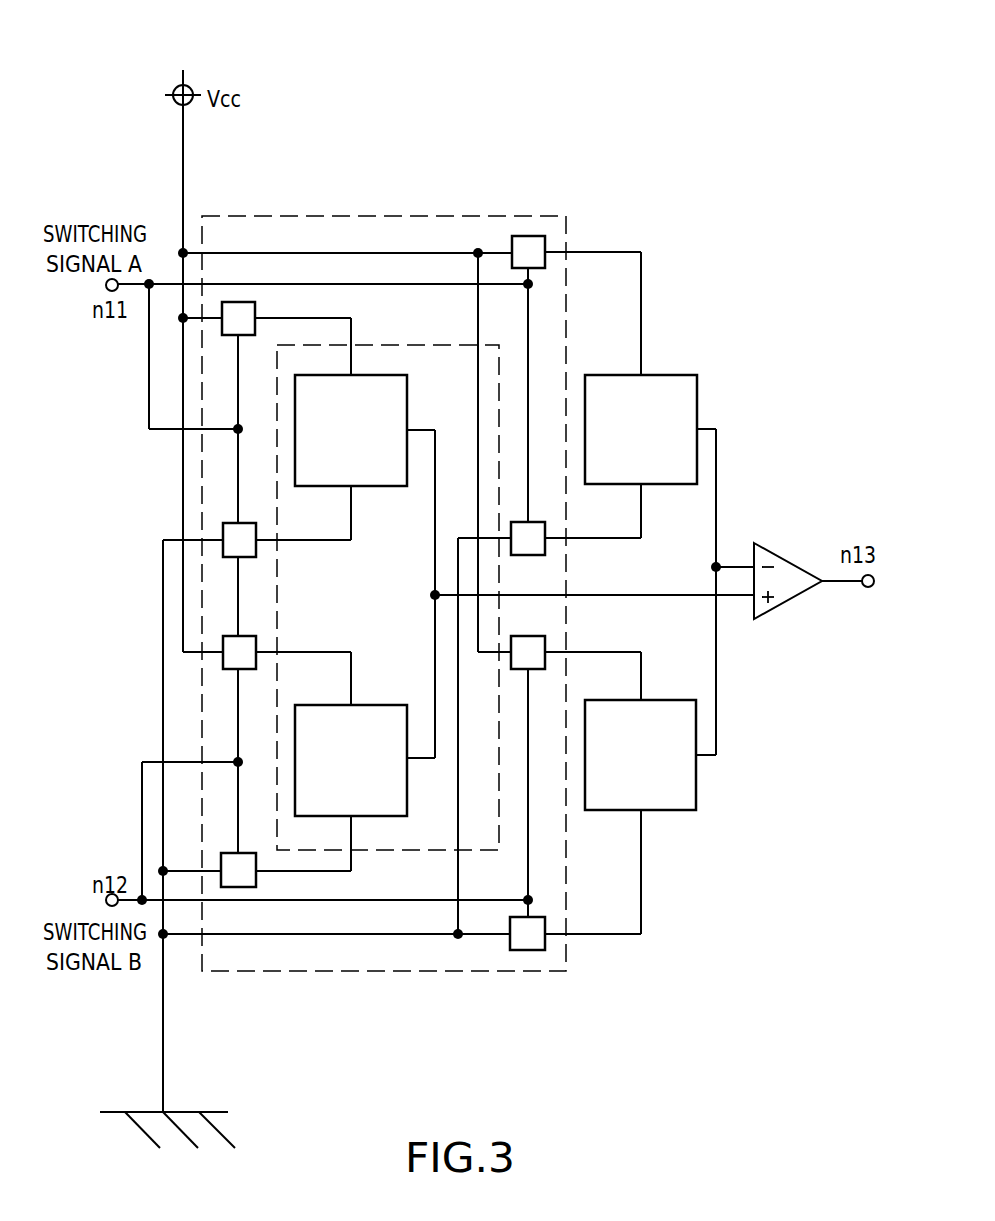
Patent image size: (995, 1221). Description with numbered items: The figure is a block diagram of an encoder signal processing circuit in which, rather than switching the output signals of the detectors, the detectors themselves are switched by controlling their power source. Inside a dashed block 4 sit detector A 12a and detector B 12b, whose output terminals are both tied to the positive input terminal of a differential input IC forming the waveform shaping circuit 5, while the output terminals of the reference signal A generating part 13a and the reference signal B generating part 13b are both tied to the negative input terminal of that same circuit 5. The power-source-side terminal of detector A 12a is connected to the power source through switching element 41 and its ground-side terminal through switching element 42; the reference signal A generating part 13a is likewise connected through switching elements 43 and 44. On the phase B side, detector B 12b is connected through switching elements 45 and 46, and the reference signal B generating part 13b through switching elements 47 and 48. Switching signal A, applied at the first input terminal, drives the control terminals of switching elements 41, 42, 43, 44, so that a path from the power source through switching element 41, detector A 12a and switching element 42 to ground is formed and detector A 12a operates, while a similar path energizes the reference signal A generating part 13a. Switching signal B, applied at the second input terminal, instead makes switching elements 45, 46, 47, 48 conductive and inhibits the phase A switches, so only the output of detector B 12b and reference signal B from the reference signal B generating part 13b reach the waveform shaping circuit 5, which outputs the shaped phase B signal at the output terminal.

The detection circuit 4 is at (380, 215).
The switching element 41 is at (260, 316).
The switching element 42 is at (239, 557).
The switching element 43 is at (511, 245).
The switching element 44 is at (528, 556).
The switching element 45 is at (239, 642).
The switching element 46 is at (258, 878).
The switching element 47 is at (528, 642).
The switching element 48 is at (510, 947).
The detector A 12a is at (369, 487).
The detector B 12b is at (369, 704).
The reference signal A generating part 13a is at (667, 374).
The reference signal B generating part 13b is at (667, 812).
The waveform shaping circuit 5 is at (788, 555).